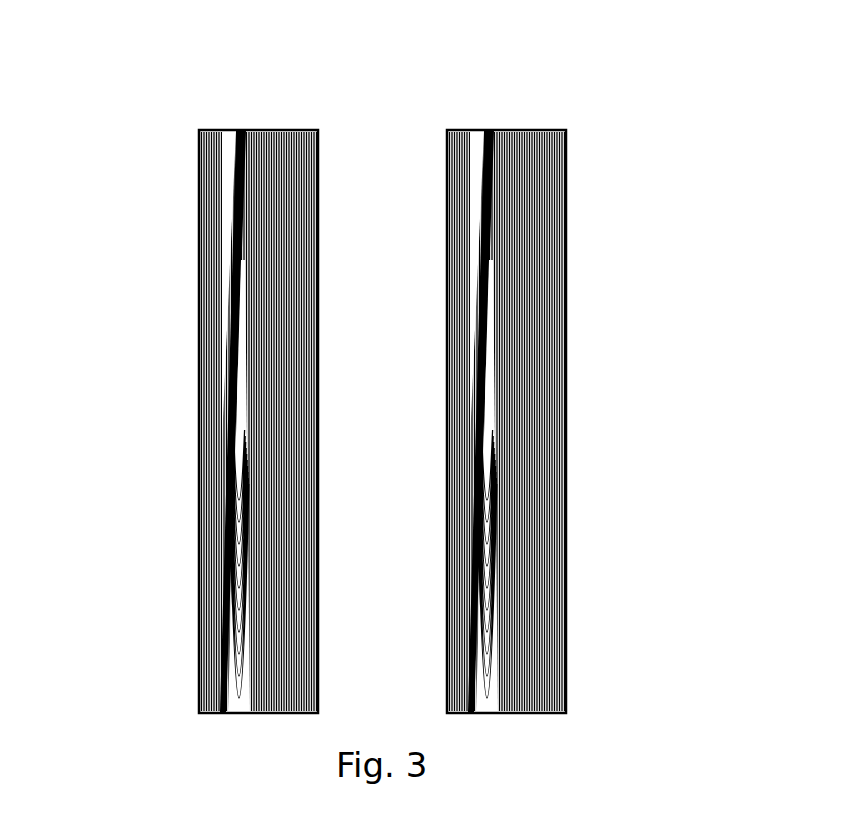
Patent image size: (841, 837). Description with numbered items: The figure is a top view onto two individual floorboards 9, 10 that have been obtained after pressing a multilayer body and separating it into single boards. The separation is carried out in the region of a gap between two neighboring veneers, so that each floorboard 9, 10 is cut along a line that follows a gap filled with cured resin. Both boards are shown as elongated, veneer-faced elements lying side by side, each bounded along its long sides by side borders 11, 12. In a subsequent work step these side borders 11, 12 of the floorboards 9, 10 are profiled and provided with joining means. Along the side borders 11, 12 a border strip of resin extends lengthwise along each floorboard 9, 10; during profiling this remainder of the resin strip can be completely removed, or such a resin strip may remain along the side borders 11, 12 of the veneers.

The floorboard 9 is at (234, 361).
The floorboard 10 is at (522, 362).
The side border 11 is at (234, 421).
The side border 12 is at (522, 421).